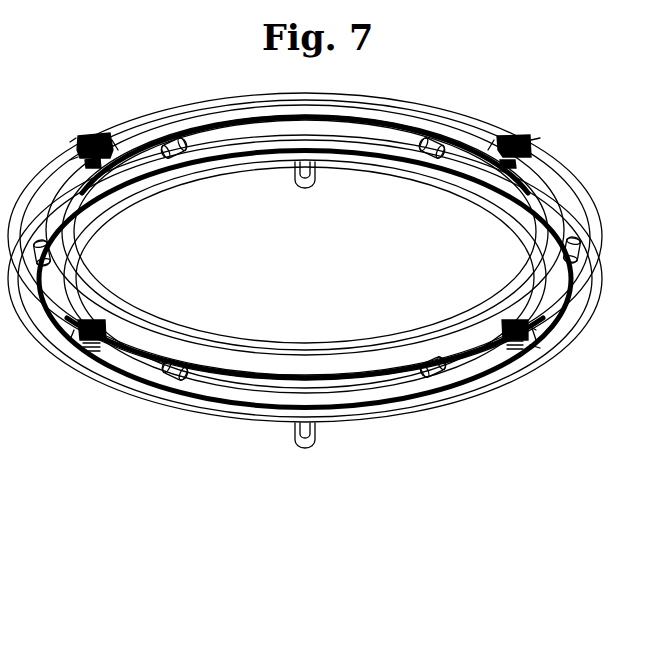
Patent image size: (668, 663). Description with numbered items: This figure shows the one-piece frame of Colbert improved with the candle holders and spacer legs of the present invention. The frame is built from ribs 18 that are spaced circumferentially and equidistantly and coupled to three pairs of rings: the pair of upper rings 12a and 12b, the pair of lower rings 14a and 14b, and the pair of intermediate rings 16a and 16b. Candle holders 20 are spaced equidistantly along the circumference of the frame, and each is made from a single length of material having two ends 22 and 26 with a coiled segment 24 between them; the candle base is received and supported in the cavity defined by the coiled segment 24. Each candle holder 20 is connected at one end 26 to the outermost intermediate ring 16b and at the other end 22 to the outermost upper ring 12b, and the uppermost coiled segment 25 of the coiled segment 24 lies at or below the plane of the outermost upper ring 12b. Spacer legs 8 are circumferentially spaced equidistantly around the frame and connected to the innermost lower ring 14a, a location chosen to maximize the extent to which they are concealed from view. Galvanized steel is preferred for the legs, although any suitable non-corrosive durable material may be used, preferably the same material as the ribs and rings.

The spacer legs 8 is at (293, 185).
The upper ring 12a is at (288, 113).
The outermost upper ring 12b is at (360, 100).
The innermost lower ring 14a is at (492, 207).
The lower ring 14b is at (530, 210).
The intermediate ring 16a is at (537, 255).
The outermost intermediate ring 16b is at (597, 233).
The ribs 18 is at (174, 140).
The candle holder 20 is at (90, 133).
The end 22 is at (112, 135).
The coiled segment 24 is at (78, 158).
The uppermost coiled segment 25 is at (80, 138).
The end 26 is at (97, 352).